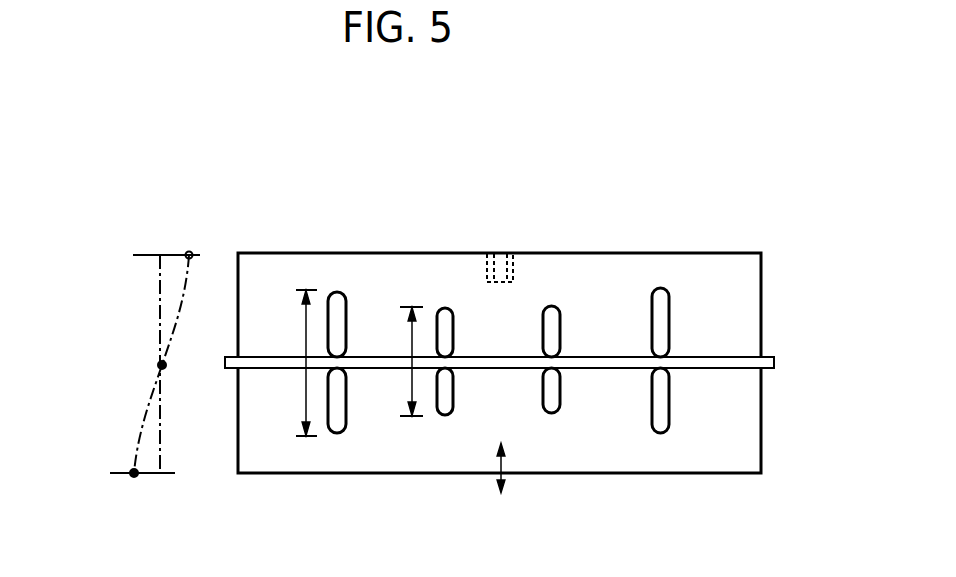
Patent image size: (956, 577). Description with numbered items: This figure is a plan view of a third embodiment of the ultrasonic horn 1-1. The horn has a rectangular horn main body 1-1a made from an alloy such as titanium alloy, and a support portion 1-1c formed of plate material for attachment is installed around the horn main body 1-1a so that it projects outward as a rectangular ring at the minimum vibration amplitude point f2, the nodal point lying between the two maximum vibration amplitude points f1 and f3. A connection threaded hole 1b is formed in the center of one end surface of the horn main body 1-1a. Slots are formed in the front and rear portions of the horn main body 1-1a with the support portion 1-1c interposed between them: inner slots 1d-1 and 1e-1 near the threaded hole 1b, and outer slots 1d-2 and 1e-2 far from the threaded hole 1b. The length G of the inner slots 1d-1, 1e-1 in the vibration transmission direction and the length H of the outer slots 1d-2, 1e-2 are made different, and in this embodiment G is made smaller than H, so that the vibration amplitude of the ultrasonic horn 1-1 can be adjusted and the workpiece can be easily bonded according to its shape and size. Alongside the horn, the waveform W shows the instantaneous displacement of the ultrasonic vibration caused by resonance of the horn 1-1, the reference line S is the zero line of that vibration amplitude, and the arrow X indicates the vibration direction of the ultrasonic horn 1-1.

The ultrasonic horn 1-1 is at (770, 256).
The horn main body 1-1a is at (747, 443).
The support portion 1-1c is at (774, 361).
The connection threaded hole 1b is at (538, 299).
The inner slot 1e-1 is at (540, 325).
The outer slot 1e-2 is at (338, 292).
The inner slot 1d-1 is at (538, 398).
The outer slot 1d-2 is at (335, 433).
The length of outer slots H is at (286, 363).
The length of inner slots G is at (399, 361).
The vibration direction X is at (517, 476).
The waveform W is at (148, 378).
The reference line S is at (162, 424).
The maximum vibration amplitude point f1 is at (188, 252).
The minimum vibration amplitude point f2 is at (160, 364).
The maximum vibration amplitude point f3 is at (132, 472).